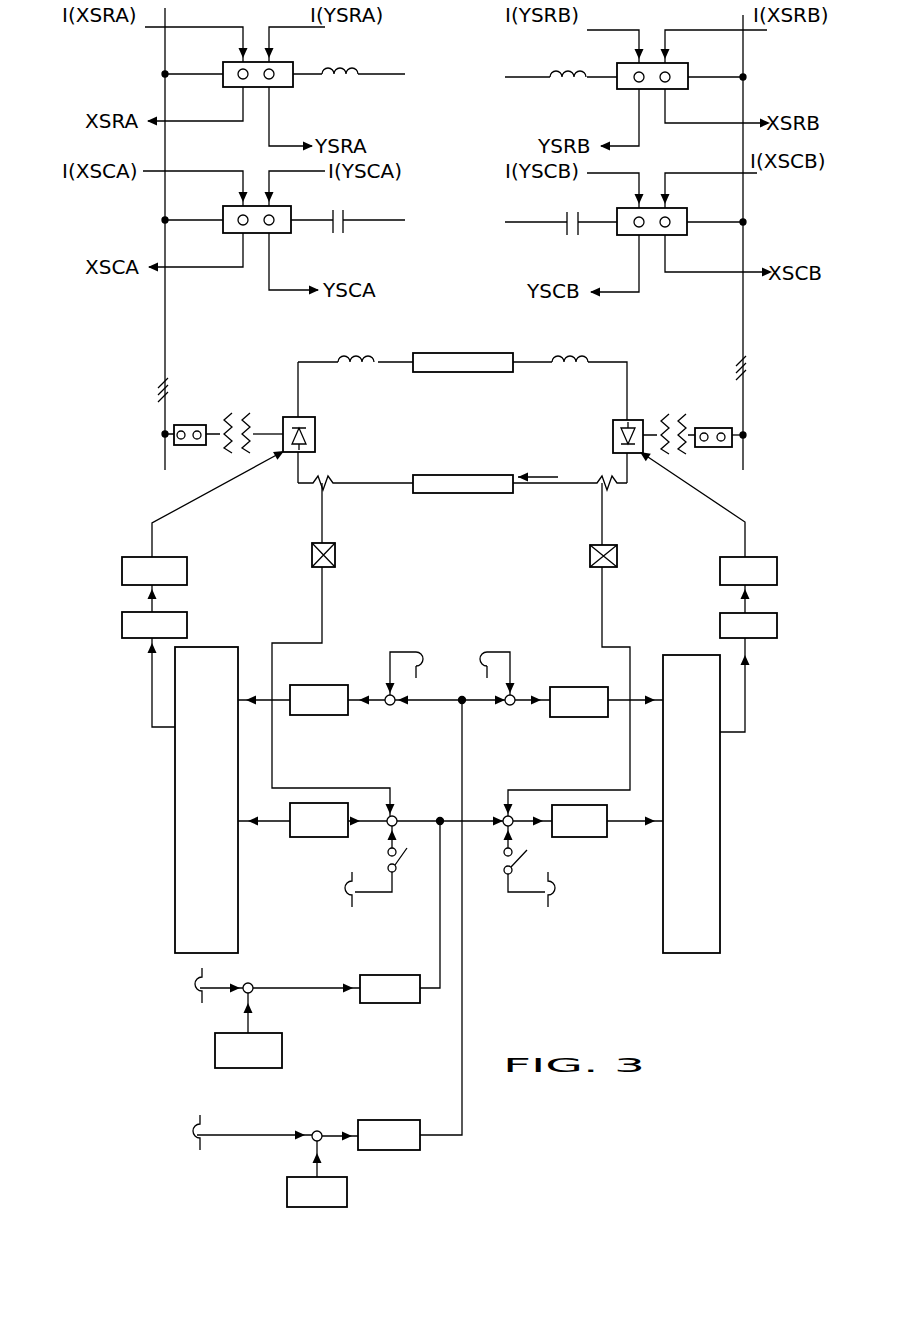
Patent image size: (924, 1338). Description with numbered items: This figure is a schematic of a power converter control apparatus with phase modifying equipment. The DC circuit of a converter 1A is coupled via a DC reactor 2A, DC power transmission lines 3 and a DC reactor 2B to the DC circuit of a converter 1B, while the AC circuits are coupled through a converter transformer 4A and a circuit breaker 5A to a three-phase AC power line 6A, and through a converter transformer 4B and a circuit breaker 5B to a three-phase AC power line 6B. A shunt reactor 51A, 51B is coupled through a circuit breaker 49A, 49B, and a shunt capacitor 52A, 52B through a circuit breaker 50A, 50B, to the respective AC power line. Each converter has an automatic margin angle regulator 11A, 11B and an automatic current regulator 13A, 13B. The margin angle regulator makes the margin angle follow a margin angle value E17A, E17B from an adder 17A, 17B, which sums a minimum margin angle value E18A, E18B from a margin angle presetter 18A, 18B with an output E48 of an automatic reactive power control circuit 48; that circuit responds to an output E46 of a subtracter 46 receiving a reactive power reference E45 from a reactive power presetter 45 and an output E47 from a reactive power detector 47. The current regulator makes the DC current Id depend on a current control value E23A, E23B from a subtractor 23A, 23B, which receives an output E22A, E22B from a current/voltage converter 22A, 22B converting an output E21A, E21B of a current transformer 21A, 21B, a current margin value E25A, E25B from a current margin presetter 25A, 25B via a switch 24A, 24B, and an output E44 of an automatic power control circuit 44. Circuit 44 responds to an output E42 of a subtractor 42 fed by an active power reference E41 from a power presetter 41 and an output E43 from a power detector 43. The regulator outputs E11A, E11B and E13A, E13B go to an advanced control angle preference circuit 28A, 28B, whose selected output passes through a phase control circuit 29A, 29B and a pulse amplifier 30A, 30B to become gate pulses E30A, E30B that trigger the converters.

The converter 1A is at (313, 416).
The converter 1B is at (613, 420).
The DC reactor 2A is at (365, 353).
The DC reactor 2B is at (573, 355).
The DC power transmission lines 3 is at (473, 353).
The converter transformer 4A is at (248, 414).
The converter transformer 4B is at (670, 417).
The circuit breaker 5A is at (190, 424).
The circuit breaker 5B is at (710, 428).
The 3-phase AC power line 6A is at (159, 320).
The 3-phase AC power line 6B is at (743, 345).
The automatic margin angle regulator 11A is at (297, 685).
The automatic margin angle regulator 11B is at (577, 687).
The automatic current regulator 13A is at (300, 836).
The automatic current regulator 13B is at (608, 837).
The adder 17A is at (390, 706).
The adder 17B is at (513, 717).
The margin angle presetter 18A is at (416, 646).
The margin angle presetter 18B is at (488, 645).
The current transformer 21A is at (333, 473).
The current transformer 21B is at (595, 473).
The current/voltage converter 22A is at (335, 555).
The current/voltage converter 22B is at (590, 555).
The subtractor 23A is at (401, 790).
The subtractor 23B is at (502, 808).
The switch 24A is at (405, 863).
The switch 24B is at (505, 853).
The current margin presetter 25A is at (345, 902).
The current margin presetter 25B is at (552, 903).
The advanced control angle preference circuit 28A is at (175, 763).
The advanced control angle preference circuit 28B is at (720, 790).
The phase control circuit 29A is at (187, 625).
The phase control circuit 29B is at (720, 627).
The pulse amplifier 30A is at (187, 570).
The pulse amplifier 30B is at (720, 575).
The power presetter 41 is at (205, 980).
The subtractor 42 is at (252, 983).
The power detector 43 is at (282, 1045).
The automatic power control circuit 44 is at (393, 975).
The reactive power presetter 45 is at (200, 1128).
The subtracter 46 is at (320, 1132).
The reactive power detector 47 is at (347, 1190).
The automatic reactive power control circuit 48 is at (398, 1120).
The circuit breaker 49A is at (296, 88).
The circuit breaker 49B is at (615, 88).
The circuit breaker 50A is at (282, 233).
The circuit breaker 50B is at (622, 235).
The shunt reactor 51A is at (352, 78).
The shunt reactor 51B is at (560, 80).
The shunt capacitor 52A is at (344, 236).
The shunt capacitor 52B is at (570, 239).
The output of automatic margin angle regulator E11A is at (263, 698).
The output of automatic margin angle regulator E11B is at (643, 698).
The output of automatic current regulator E13A is at (278, 794).
The output of automatic current regulator E13B is at (630, 790).
The margin angle value E17A is at (370, 702).
The margin angle value E17B is at (528, 705).
The minimum margin angle value E18A is at (413, 652).
The minimum margin angle value E18B is at (510, 668).
The output of current transformer E21A is at (323, 518).
The output of current transformer E21B is at (602, 518).
The output of current/voltage converter E22A is at (322, 585).
The output of current/voltage converter E22B is at (602, 585).
The current control value E23A is at (367, 828).
The current control value E23B is at (530, 828).
The current margin value E25A is at (367, 898).
The current margin value E25B is at (527, 895).
The gate pulses E30A is at (187, 503).
The gate pulses E30B is at (710, 493).
The active power reference E41 is at (220, 993).
The output of subtractor E42 is at (333, 990).
The output of power detector E43 is at (248, 1020).
The output of automatic power control circuit E44 is at (427, 990).
The reactive power reference E45 is at (260, 1135).
The output of subtracter E46 is at (332, 1138).
The output of reactive power detector E47 is at (313, 1168).
The output of automatic reactive power control circuit E48 is at (462, 1135).
The DC current Id is at (538, 467).